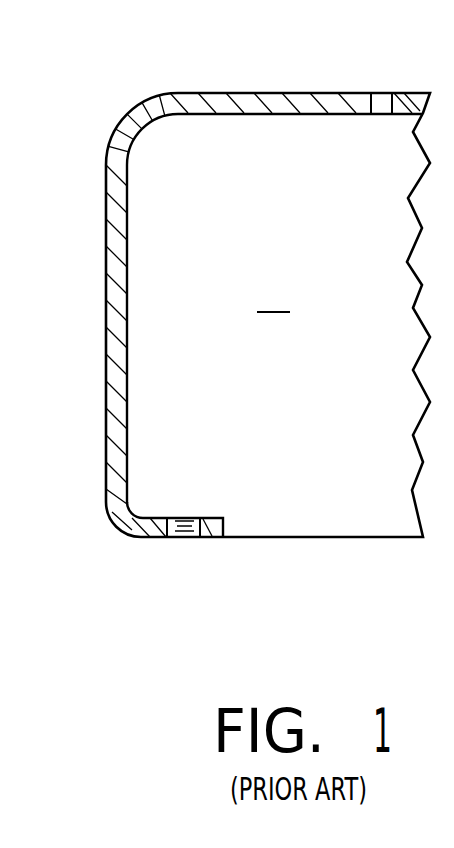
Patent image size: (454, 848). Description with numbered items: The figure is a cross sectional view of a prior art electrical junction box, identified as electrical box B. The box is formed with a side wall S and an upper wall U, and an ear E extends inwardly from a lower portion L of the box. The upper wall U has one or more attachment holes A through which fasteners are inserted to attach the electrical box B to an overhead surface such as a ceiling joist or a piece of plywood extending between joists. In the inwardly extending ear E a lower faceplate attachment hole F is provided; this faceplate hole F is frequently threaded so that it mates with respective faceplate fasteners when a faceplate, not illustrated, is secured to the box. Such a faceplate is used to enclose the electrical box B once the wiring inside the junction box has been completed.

The side wall S is at (106, 211).
The upper wall U is at (283, 115).
The attachment hole A is at (382, 103).
The electrical box B is at (273, 298).
The ear E is at (212, 517).
The lower portion L is at (120, 525).
The faceplate attachment hole F is at (187, 540).